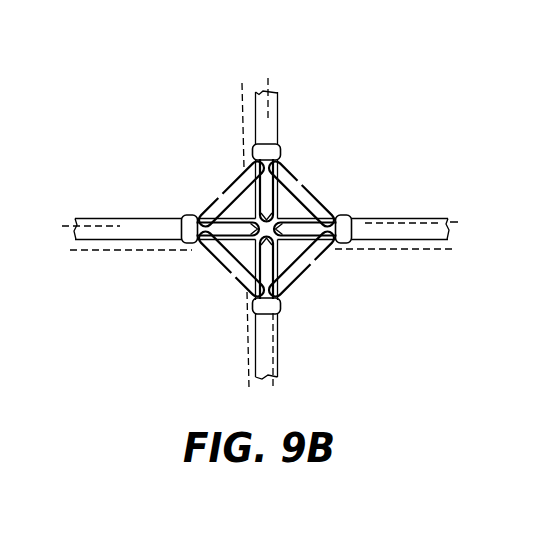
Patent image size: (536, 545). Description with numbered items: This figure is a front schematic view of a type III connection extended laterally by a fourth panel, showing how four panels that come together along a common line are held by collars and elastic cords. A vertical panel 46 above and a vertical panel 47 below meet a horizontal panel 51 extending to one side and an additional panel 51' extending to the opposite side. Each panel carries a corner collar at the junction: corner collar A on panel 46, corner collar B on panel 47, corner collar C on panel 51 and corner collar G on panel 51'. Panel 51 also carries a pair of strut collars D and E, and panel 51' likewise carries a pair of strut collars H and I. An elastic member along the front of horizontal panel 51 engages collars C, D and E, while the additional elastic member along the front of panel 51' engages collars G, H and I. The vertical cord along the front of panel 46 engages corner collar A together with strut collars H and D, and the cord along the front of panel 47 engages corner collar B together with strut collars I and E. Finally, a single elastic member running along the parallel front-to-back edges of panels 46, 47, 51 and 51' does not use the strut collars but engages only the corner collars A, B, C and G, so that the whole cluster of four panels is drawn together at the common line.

The panel 46 is at (277, 113).
The panel 47 is at (282, 365).
The panel 51 is at (368, 200).
The additional panel 51' is at (159, 265).
The corner collar A is at (275, 151).
The corner collar B is at (277, 305).
The corner collar C is at (349, 221).
The strut collar D is at (310, 194).
The strut collar E is at (316, 262).
The corner collar G is at (184, 217).
The strut collar H is at (221, 192).
The strut collar I is at (229, 280).